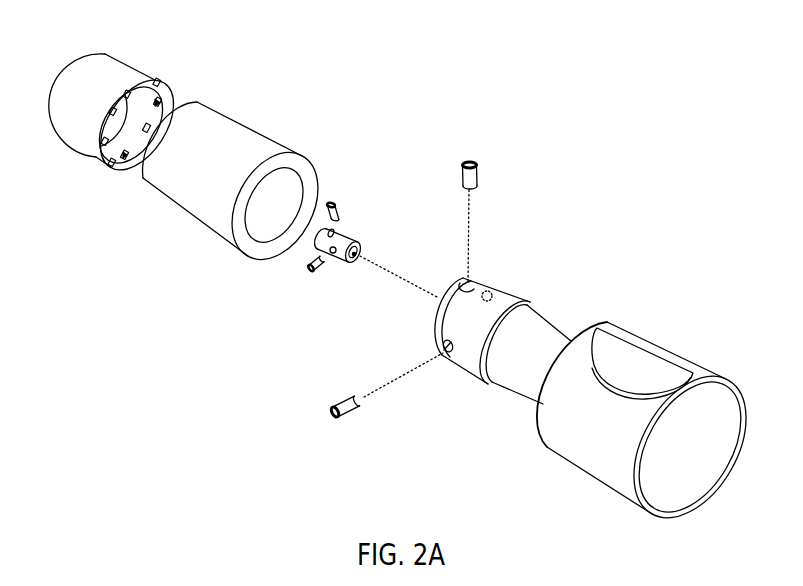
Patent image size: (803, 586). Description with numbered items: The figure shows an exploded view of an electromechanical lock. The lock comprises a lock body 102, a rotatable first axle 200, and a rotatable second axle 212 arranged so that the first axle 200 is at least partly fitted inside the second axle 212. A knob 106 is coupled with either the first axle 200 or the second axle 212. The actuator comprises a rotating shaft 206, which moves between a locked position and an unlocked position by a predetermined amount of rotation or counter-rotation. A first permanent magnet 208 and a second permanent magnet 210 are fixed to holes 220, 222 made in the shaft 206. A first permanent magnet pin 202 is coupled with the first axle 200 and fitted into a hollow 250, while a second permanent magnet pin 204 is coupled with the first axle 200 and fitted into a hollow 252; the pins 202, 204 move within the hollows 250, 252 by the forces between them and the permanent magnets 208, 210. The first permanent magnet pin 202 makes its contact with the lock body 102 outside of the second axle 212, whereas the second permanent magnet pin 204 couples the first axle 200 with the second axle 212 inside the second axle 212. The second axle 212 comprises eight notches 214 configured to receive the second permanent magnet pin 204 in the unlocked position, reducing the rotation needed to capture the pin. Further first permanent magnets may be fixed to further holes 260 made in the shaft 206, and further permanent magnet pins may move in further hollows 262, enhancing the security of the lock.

The lock body 102 is at (191, 219).
The knob 106 is at (589, 482).
The first axle 200 is at (478, 285).
The first permanent magnet pin 202 is at (341, 399).
The second permanent magnet pin 204 is at (478, 178).
The rotating shaft 206 is at (347, 240).
The first permanent magnet 208 is at (321, 270).
The second permanent magnet 210 is at (337, 214).
The second axle 212 is at (80, 150).
The notch 214 is at (165, 103).
The hole 220 is at (334, 252).
The hole 222 is at (333, 231).
The hollow 250 is at (441, 347).
The hollow 252 is at (463, 287).
The further hole 260 is at (358, 243).
The further hollow 262 is at (492, 295).